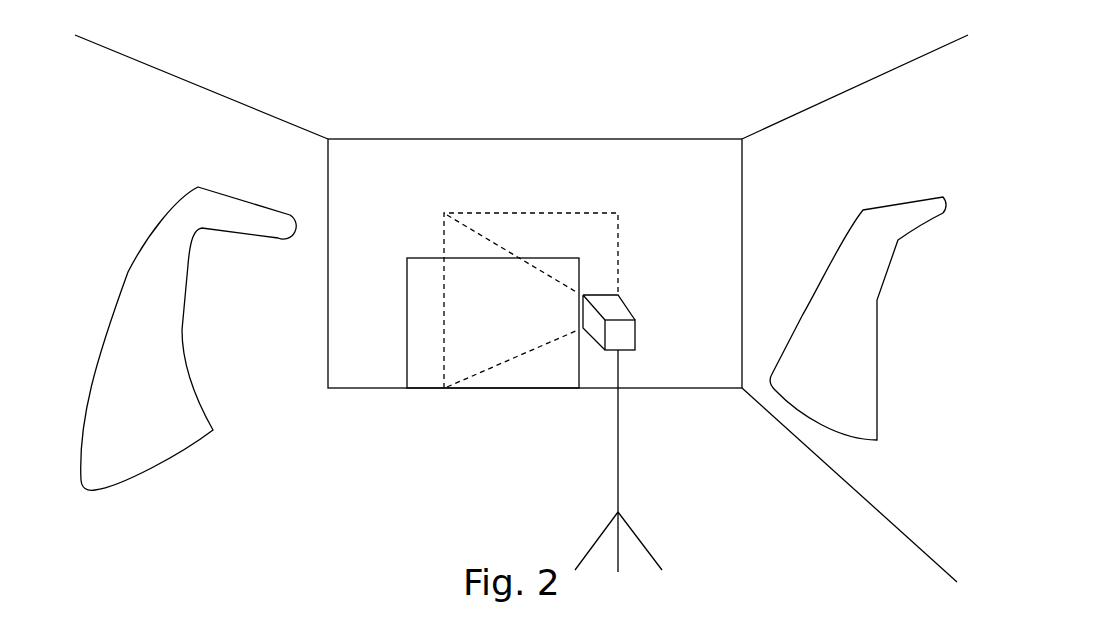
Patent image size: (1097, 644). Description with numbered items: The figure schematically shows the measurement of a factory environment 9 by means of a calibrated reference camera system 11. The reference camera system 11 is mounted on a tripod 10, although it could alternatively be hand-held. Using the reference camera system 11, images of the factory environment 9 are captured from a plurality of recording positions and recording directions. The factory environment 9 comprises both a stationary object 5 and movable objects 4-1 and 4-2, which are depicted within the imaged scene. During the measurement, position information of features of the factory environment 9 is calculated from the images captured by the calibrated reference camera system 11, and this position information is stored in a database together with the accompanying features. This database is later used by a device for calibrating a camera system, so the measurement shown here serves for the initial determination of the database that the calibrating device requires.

The factory environment 9 is at (704, 98).
The movable object 4-1 is at (128, 272).
The movable object 4-2 is at (895, 205).
The stationary object 5 is at (540, 258).
The reference camera system 11 is at (637, 330).
The tripod 10 is at (620, 462).